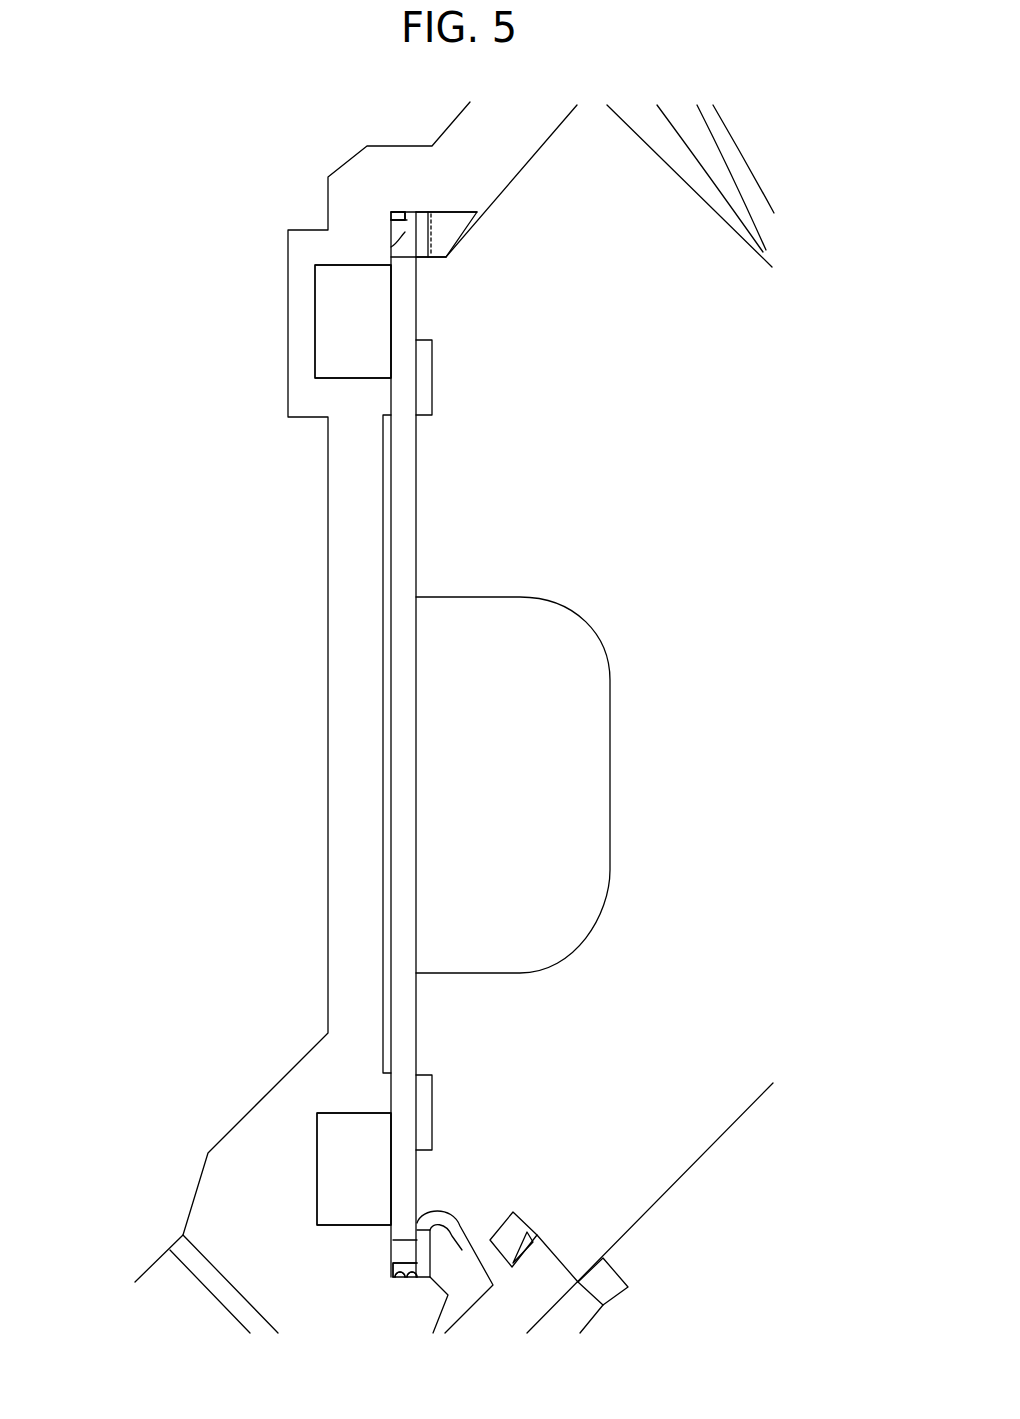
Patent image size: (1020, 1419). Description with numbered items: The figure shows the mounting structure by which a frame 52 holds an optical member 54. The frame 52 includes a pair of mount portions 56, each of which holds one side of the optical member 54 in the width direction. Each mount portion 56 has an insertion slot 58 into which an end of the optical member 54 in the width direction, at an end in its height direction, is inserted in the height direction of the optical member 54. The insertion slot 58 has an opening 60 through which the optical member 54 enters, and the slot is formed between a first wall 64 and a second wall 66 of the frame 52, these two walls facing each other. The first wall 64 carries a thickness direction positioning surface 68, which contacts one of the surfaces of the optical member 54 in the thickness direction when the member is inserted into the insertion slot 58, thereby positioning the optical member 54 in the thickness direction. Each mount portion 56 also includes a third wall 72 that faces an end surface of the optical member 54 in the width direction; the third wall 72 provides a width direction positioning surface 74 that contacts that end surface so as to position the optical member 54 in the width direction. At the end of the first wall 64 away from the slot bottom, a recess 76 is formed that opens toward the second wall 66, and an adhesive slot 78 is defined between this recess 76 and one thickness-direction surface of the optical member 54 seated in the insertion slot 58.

The frame 52 is at (595, 432).
The optical member 54 is at (410, 667).
The mount portion 56 is at (437, 272).
The insertion slot 58 is at (388, 237).
The opening 60 is at (428, 240).
The first wall 64 is at (328, 200).
The second wall 66 is at (460, 234).
The thickness direction positioning surface 68 is at (393, 246).
The third wall 72 is at (386, 232).
The width direction positioning surface 74 is at (386, 232).
The recess 76 is at (318, 316).
The adhesive slot 78 is at (318, 316).